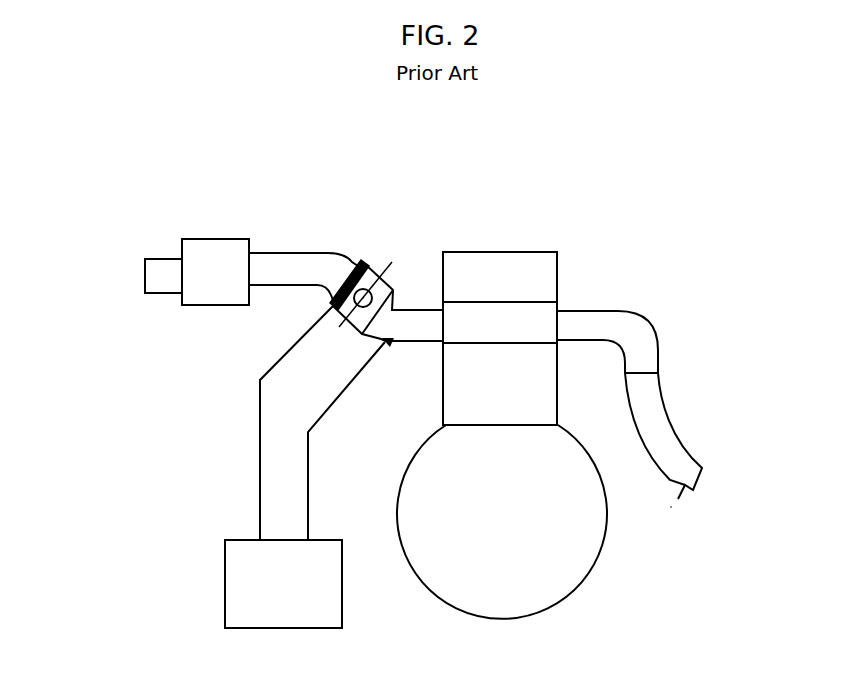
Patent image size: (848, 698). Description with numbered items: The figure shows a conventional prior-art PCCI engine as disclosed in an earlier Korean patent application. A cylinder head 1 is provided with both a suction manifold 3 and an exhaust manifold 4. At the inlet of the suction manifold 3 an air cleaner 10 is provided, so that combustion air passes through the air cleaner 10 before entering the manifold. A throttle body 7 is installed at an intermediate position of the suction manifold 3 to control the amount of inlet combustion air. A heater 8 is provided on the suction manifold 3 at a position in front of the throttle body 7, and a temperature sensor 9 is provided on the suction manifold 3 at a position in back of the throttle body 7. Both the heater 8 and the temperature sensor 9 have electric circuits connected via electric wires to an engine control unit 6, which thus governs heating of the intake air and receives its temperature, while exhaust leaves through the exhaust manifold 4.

The cylinder head 1 is at (508, 285).
The suction manifold 3 is at (293, 267).
The exhaust manifold 4 is at (628, 326).
The engine control unit 6 is at (255, 572).
The throttle body 7 is at (386, 264).
The heater 8 is at (361, 261).
The temperature sensor 9 is at (385, 342).
The air cleaner 10 is at (203, 263).